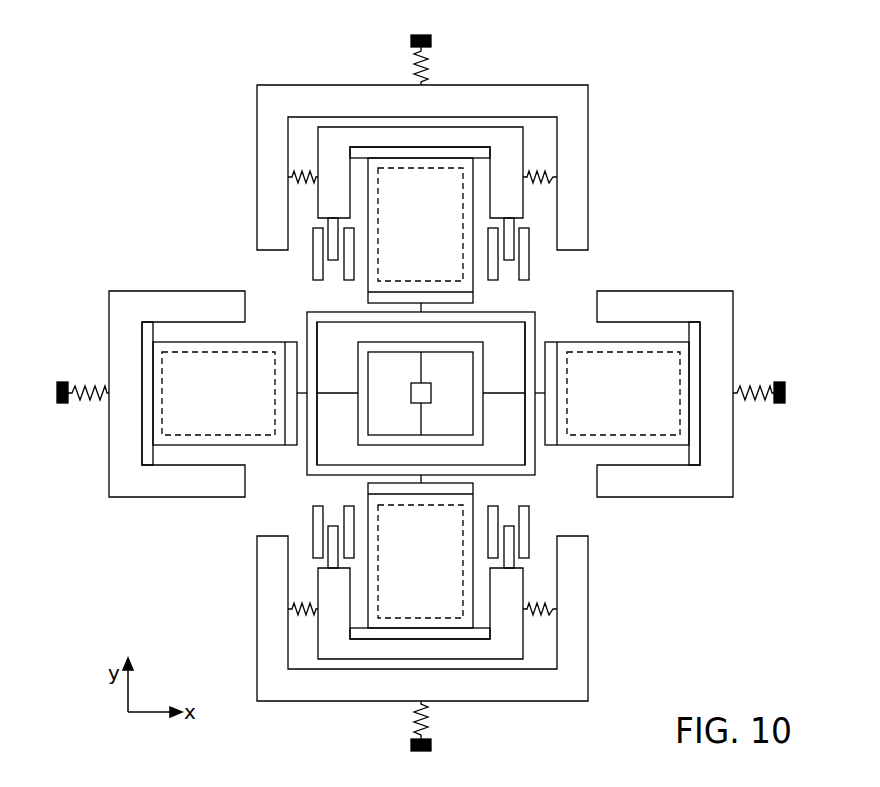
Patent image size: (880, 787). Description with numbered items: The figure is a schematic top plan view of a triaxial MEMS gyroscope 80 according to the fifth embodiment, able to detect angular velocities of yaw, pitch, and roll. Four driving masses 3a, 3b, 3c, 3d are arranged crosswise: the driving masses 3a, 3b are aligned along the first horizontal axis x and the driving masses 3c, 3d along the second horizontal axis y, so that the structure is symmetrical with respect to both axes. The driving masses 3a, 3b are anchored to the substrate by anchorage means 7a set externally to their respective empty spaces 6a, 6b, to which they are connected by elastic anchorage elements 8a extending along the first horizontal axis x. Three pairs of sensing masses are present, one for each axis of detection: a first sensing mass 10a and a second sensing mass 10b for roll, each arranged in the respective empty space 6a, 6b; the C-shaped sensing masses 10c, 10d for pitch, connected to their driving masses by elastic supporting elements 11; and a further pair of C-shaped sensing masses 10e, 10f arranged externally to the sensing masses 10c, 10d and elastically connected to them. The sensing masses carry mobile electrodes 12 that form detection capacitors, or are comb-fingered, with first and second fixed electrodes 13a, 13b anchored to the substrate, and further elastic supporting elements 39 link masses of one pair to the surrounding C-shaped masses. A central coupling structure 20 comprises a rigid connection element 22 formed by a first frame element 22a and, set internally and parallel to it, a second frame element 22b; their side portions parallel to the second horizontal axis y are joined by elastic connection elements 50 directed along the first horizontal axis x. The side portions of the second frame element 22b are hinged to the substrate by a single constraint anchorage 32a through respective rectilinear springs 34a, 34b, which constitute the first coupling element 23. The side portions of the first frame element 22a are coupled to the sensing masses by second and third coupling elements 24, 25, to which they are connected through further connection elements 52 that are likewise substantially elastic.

The driving mass 3a is at (142, 486).
The driving mass 3b is at (694, 484).
The driving mass 3c is at (577, 102).
The driving mass 3d is at (558, 690).
The empty space 6a is at (178, 453).
The empty space 6b is at (623, 458).
The anchorage means 7a is at (433, 40).
The elastic anchorage elements 8a is at (430, 70).
The first sensing mass 10a is at (153, 360).
The second sensing mass 10b is at (668, 348).
The sensing mass 10c is at (390, 163).
The sensing mass 10d is at (383, 623).
The sensing mass 10e is at (325, 140).
The sensing mass 10f is at (337, 650).
The elastic supporting elements 11 is at (155, 330).
The mobile electrodes 12 is at (513, 228).
The first fixed electrodes 13a is at (528, 258).
The second fixed electrodes 13b is at (495, 278).
The coupling structure 20 is at (548, 310).
The rigid connection element 22 is at (300, 302).
The first frame element 22a is at (537, 328).
The second frame element 22b is at (357, 370).
The first coupling element 23 is at (432, 378).
The second coupling element 24 is at (482, 298).
The third coupling element 25 is at (482, 492).
The constraint anchorage 32a is at (421, 397).
The rectilinear spring 34a is at (416, 356).
The rectilinear spring 34b is at (418, 428).
The further elastic supporting elements 39 is at (360, 155).
The elastic connection elements 50 is at (507, 390).
The further connection elements 52 is at (297, 435).
The triaxial MEMS gyroscope 80 is at (704, 126).